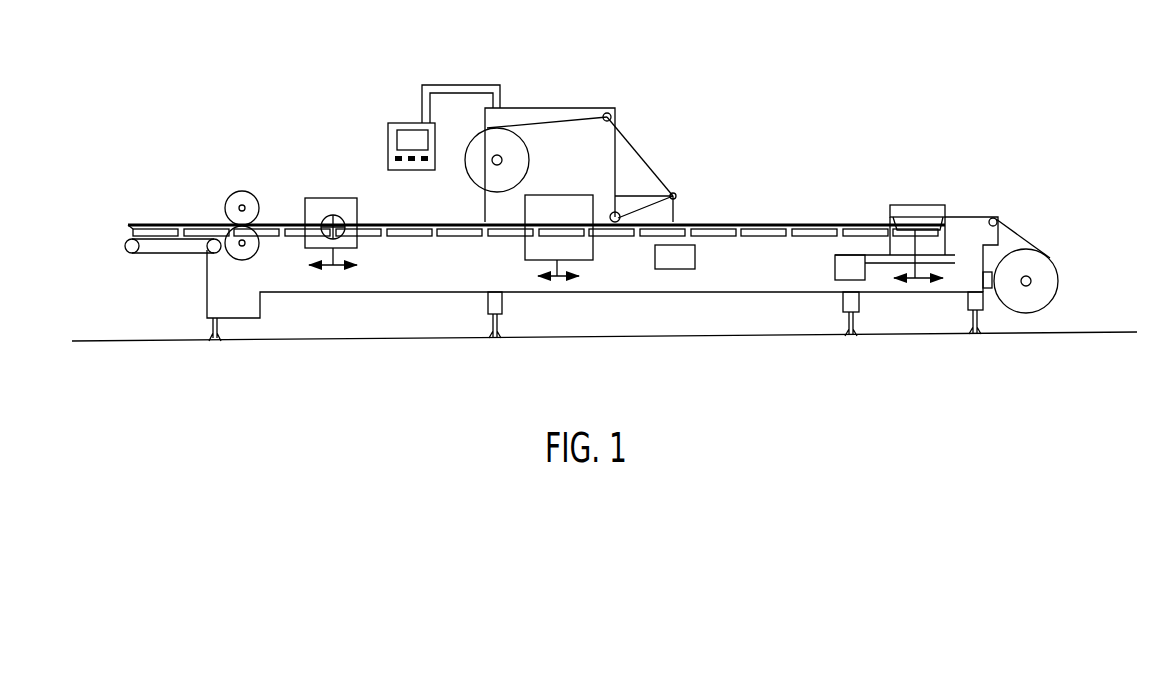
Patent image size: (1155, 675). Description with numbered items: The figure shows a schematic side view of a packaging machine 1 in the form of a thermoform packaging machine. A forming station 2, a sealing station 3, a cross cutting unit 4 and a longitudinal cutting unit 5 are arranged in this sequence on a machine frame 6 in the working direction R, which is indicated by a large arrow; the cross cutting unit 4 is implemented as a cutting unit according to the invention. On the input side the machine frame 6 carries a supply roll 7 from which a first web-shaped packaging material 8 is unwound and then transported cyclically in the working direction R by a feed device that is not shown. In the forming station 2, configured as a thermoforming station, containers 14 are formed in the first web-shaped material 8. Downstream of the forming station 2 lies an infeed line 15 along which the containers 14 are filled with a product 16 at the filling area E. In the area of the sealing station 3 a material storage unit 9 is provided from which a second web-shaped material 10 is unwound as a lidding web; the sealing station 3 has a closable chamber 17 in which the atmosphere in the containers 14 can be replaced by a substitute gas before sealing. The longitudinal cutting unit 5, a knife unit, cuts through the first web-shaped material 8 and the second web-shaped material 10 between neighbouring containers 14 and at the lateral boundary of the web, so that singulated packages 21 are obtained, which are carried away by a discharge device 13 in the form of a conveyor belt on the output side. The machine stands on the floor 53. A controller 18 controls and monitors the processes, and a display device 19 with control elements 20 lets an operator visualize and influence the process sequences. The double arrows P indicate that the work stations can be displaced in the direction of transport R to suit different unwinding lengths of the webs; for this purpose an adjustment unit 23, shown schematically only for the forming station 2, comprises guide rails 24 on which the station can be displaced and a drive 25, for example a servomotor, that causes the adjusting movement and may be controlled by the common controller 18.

The packaging machine 1 is at (808, 36).
The forming station 2 is at (920, 206).
The sealing station 3 is at (547, 207).
The cross cutting unit 4 is at (320, 203).
The longitudinal cutting unit 5 is at (240, 188).
The machine frame 6 is at (481, 298).
The supply roll 7 is at (1037, 258).
The first web-shaped packaging material 8 is at (1016, 237).
The material storage unit 9 is at (482, 178).
The second web-shaped material 10 is at (580, 116).
The discharge device 13 is at (157, 254).
The containers 14 is at (912, 230).
The infeed line 15 is at (738, 242).
The product 16 is at (780, 222).
The closable chamber 17 is at (557, 277).
The controller 18 is at (675, 262).
The display device 19 is at (410, 123).
The control elements 20 is at (395, 158).
The singulated packages 21 is at (147, 224).
The adjustment unit 23 is at (822, 263).
The guide rails 24 is at (870, 253).
The drive 25 is at (840, 273).
The floor 53 is at (1115, 331).
The filling station E is at (870, 216).
The double arrows P is at (333, 266).
The working direction R is at (852, 142).